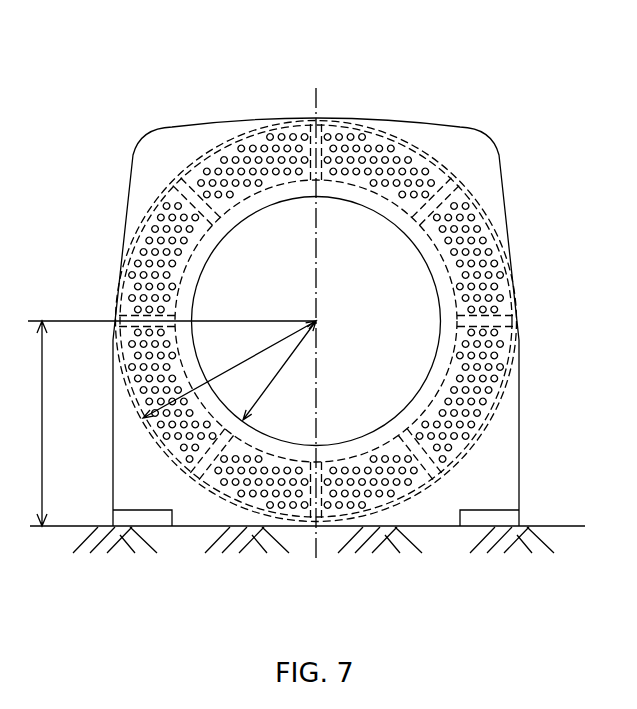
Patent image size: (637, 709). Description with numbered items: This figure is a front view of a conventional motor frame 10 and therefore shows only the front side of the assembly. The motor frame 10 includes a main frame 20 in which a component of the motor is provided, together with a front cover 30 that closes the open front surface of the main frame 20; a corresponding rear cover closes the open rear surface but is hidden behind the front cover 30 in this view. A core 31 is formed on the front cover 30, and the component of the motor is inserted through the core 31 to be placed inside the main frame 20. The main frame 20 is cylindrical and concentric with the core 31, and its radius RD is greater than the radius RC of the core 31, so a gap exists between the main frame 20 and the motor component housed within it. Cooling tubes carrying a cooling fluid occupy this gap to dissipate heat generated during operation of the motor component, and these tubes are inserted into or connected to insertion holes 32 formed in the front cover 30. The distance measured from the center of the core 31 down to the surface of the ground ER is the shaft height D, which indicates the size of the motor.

The motor frame 10 is at (328, 39).
The main frame 20 is at (222, 136).
The front cover 30 is at (486, 124).
The core 31 is at (350, 203).
The insertion hole 32 is at (429, 176).
The shaft height D is at (35, 423).
The radius of the main frame RD is at (229, 369).
The radius of the core RC is at (279, 370).
The ground ER is at (563, 526).